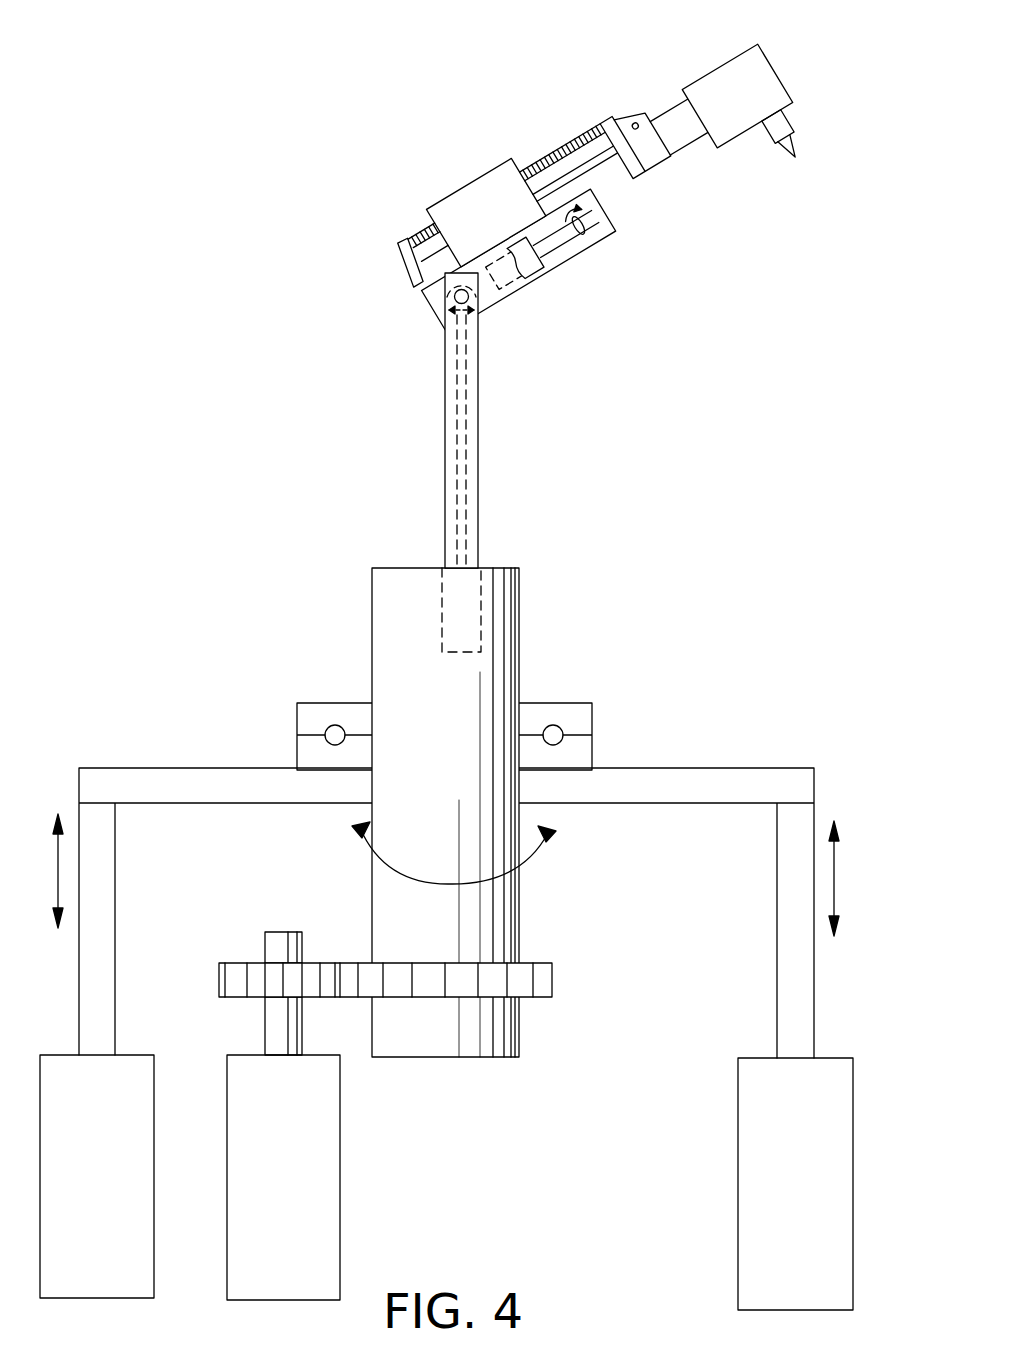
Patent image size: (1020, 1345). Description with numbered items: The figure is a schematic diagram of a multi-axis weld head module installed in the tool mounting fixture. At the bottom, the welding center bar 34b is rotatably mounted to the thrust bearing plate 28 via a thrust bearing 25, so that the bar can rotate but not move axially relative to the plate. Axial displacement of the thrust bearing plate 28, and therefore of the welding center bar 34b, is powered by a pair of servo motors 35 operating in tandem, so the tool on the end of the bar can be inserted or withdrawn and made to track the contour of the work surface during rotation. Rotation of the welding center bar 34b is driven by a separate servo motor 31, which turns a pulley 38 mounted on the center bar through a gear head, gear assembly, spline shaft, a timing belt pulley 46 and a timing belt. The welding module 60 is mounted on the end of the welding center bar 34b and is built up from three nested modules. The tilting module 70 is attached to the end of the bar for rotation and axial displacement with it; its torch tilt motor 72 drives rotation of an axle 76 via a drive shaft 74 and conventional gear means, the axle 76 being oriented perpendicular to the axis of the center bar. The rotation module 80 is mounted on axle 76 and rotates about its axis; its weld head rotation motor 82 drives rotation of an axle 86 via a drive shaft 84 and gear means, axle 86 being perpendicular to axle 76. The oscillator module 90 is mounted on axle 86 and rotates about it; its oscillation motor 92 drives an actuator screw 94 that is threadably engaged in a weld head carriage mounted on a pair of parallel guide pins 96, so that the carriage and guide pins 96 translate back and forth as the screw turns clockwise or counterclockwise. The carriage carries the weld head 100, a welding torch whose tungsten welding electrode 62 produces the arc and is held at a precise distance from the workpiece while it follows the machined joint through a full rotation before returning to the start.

The weld head 100 is at (666, 73).
The welding module 60 is at (456, 149).
The oscillator module 90 is at (421, 170).
The actuator screw 94 is at (588, 145).
The axle 86 is at (546, 199).
The oscillation motor 92 is at (485, 212).
The guide pins 96 is at (612, 172).
The welding electrode 62 is at (786, 158).
The drive shaft 84 is at (566, 258).
The weld head rotation motor 82 is at (530, 270).
The rotation module 80 is at (502, 306).
The axle 76 is at (443, 302).
The drive shaft 74 is at (480, 437).
The tilting module 70 is at (521, 585).
The torch tilt motor 72 is at (482, 625).
The welding center bar 34b is at (445, 812).
The thrust bearing 25 is at (593, 722).
The thrust bearing plate 28 is at (690, 767).
The timing belt pulley 46 is at (219, 970).
The pulley 38 is at (553, 973).
The servo motors 35 is at (155, 1078).
The servo motor 31 is at (341, 1090).